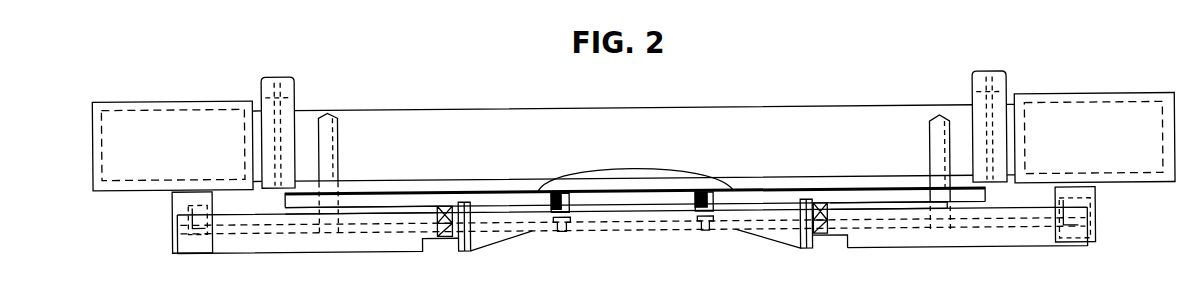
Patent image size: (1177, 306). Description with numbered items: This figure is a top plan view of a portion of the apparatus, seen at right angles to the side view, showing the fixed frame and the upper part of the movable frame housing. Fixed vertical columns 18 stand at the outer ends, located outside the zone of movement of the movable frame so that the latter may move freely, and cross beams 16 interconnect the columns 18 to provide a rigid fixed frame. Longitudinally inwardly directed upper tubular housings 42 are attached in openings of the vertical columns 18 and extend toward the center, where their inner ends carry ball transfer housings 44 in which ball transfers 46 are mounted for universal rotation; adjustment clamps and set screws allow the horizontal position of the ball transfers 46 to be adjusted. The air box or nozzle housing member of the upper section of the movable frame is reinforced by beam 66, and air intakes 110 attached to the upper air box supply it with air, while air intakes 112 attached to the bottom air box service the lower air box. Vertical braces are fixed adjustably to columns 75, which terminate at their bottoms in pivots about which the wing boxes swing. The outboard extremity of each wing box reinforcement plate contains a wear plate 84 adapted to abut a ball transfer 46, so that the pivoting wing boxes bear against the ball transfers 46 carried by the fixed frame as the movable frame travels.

The air intake 110 is at (148, 114).
The air intake 112 is at (1108, 112).
The fixed vertical column 18 is at (177, 227).
The upper tubular housing 42 is at (410, 209).
The ball transfer housing 44 is at (445, 204).
The ball transfer 46 is at (447, 228).
The wear plate 84 is at (464, 250).
The cross beam 16 is at (613, 232).
The beam 66 is at (667, 171).
The column 75 is at (571, 200).